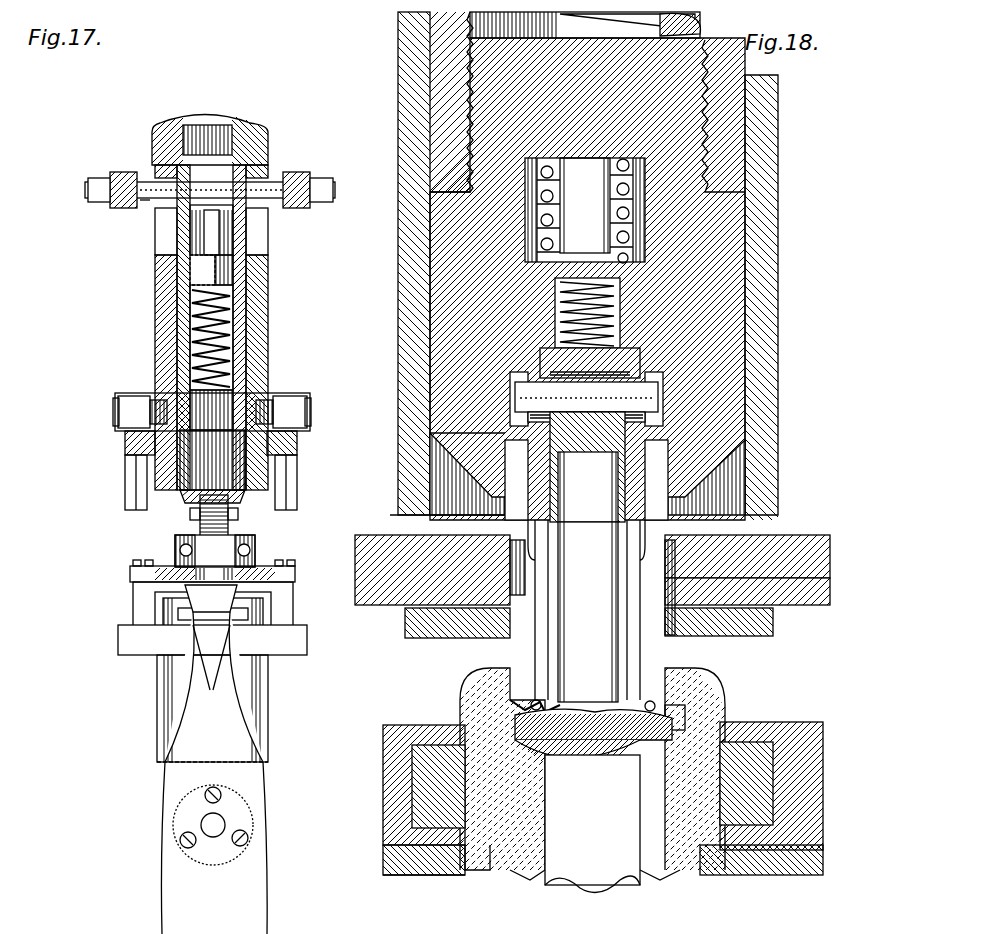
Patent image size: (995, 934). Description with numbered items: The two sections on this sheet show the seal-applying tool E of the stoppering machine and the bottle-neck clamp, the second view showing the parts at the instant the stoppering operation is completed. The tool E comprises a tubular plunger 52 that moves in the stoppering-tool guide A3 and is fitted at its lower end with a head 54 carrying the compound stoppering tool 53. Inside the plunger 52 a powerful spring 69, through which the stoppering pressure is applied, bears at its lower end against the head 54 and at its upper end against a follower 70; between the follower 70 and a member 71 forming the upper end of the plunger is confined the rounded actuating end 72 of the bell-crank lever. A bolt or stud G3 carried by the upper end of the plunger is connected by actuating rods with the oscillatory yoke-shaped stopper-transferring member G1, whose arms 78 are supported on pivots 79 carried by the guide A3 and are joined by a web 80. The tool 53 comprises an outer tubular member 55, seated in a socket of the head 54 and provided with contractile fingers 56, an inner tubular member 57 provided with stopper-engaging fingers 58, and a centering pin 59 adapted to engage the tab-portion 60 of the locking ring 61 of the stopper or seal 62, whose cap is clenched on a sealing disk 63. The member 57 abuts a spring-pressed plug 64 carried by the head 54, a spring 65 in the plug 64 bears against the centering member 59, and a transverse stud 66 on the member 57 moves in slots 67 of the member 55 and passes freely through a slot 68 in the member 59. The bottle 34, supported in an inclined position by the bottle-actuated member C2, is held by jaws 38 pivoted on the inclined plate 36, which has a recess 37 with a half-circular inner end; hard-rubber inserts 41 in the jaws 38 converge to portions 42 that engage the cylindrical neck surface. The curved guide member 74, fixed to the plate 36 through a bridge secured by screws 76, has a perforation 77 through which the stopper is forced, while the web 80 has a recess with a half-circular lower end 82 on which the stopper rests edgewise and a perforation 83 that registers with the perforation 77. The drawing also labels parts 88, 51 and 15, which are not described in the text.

In FIG. 17, the upper end member 71 is at (190, 150).
In FIG. 17, the bolt 88 is at (110, 178).
In FIG. 17, the bolt or stud G3 is at (140, 200).
In FIG. 17, the rounded actuating end 72 is at (208, 238).
In FIG. 17, the follower 70 is at (200, 270).
In FIG. 17, the spring 69 is at (200, 316).
In FIG. 18, the spring 69 is at (685, 38).
In FIG. 17, the stoppering-tool guide A3 is at (258, 283).
In FIG. 18, the stoppering-tool guide A3 is at (760, 192).
In FIG. 17, the tubular plunger 52 is at (240, 312).
In FIG. 18, the tubular plunger 52 is at (440, 56).
In FIG. 17, the pivots 79 is at (130, 413).
In FIG. 17, the head 54 is at (205, 450).
In FIG. 18, the head 54 is at (715, 228).
In FIG. 17, the arms 78 is at (128, 470).
In FIG. 17, the outer tubular member 55 is at (195, 498).
In FIG. 18, the outer tubular member 55 is at (690, 512).
In FIG. 17, the seal-applying tool E is at (228, 508).
In FIG. 17, the collar 51 is at (180, 528).
In FIG. 17, the perforation 77 is at (185, 568).
In FIG. 18, the perforation 77 is at (680, 622).
In FIG. 17, the curved guide member 74 is at (248, 575).
In FIG. 18, the curved guide member 74 is at (425, 625).
In FIG. 17, the screws 76 is at (140, 582).
In FIG. 17, the frame 15 is at (293, 605).
In FIG. 17, the inclined plate-form portion 36 is at (125, 640).
In FIG. 18, the inclined plate-form portion 36 is at (740, 865).
In FIG. 17, the recess 37 is at (250, 652).
In FIG. 17, the jaws 38 is at (250, 618).
In FIG. 18, the jaws 38 is at (392, 725).
In FIG. 17, the bottle 34 is at (175, 800).
In FIG. 17, the bottle-actuated member C2 is at (178, 840).
In FIG. 17, the web 80 is at (345, 600).
In FIG. 18, the spring-pressed plug 64 is at (665, 268).
In FIG. 18, the spring 65 is at (620, 300).
In FIG. 18, the inner tubular member 57 is at (640, 345).
In FIG. 18, the transverse stud 66 is at (662, 390).
In FIG. 18, the slots 67 is at (645, 418).
In FIG. 18, the slot 68 is at (588, 418).
In FIG. 18, the compound stoppering tool 53 is at (700, 480).
In FIG. 18, the stopper-transferring member G1 is at (427, 504).
In FIG. 18, the centering pin 59 is at (586, 611).
In FIG. 18, the half-circular lower end 82 is at (760, 545).
In FIG. 18, the perforation 83 is at (675, 578).
In FIG. 18, the contractile fingers 56 is at (665, 665).
In FIG. 18, the locking ring 61 is at (690, 712).
In FIG. 18, the stopper-engaging fingers 58 is at (528, 702).
In FIG. 18, the stopper or seal 62 is at (515, 722).
In FIG. 18, the sealing disk 63 is at (605, 760).
In FIG. 18, the tab-portion 60 is at (578, 758).
In FIG. 18, the inserts 41 is at (480, 845).
In FIG. 18, the portion 42 is at (595, 860).